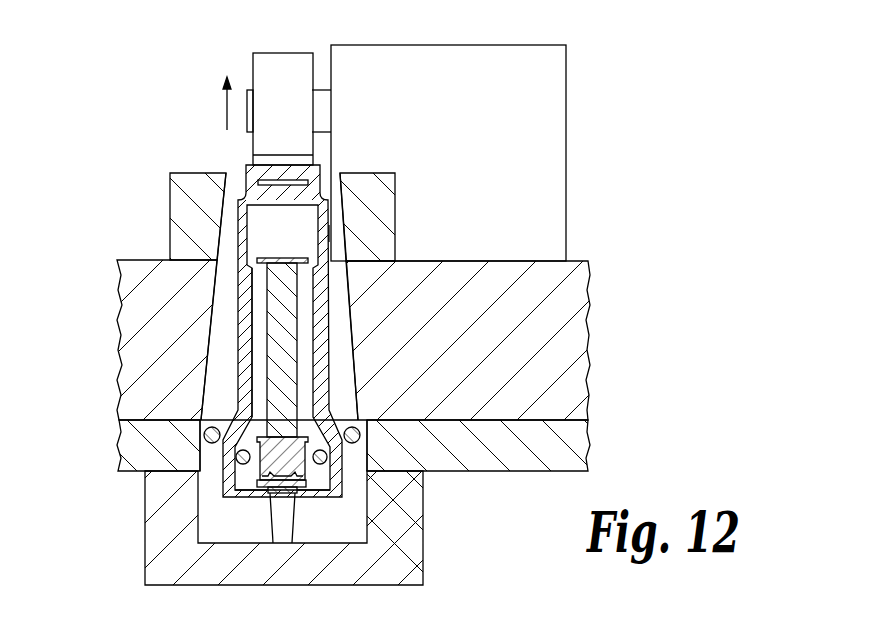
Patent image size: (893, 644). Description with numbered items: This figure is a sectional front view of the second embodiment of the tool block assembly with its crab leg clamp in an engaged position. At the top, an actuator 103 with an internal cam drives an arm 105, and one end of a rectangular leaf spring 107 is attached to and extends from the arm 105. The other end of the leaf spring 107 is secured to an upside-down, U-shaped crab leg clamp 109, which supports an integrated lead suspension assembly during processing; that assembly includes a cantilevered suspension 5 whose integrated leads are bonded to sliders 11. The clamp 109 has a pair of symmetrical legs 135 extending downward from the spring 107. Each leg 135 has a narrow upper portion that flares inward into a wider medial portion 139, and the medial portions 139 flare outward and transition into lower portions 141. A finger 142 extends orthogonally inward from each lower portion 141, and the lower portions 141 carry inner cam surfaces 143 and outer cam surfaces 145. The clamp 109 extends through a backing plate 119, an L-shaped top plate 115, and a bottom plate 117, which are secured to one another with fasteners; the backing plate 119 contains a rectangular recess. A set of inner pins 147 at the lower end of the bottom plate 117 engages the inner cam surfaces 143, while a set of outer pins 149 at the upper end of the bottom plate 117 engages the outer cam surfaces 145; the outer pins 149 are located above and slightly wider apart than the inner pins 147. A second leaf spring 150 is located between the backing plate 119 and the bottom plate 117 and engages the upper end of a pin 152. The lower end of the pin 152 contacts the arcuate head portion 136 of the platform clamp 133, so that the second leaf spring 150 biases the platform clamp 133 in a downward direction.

The actuator 103 is at (472, 70).
The arm 105 is at (282, 70).
The rectangular leaf spring 107 is at (262, 170).
The crab leg clamp 109 is at (293, 172).
The legs 135 is at (345, 233).
The backing plate 119 is at (182, 200).
The top plate 115 is at (122, 278).
The outer cam surfaces 145 is at (228, 412).
The bottom plate 117 is at (127, 443).
The arcuate head portion 136 is at (367, 458).
The lower portions 141 is at (222, 473).
The sliders 11 is at (283, 495).
The second leaf spring 150 is at (275, 260).
The pin 152 is at (275, 297).
The medial portions 139 is at (247, 333).
The outer pins 149 is at (208, 432).
The inner pins 147 is at (322, 462).
The platform clamp 133 is at (302, 465).
The cantilevered suspension 5 is at (310, 483).
The finger 142 is at (297, 495).
The inner cam surfaces 143 is at (258, 493).